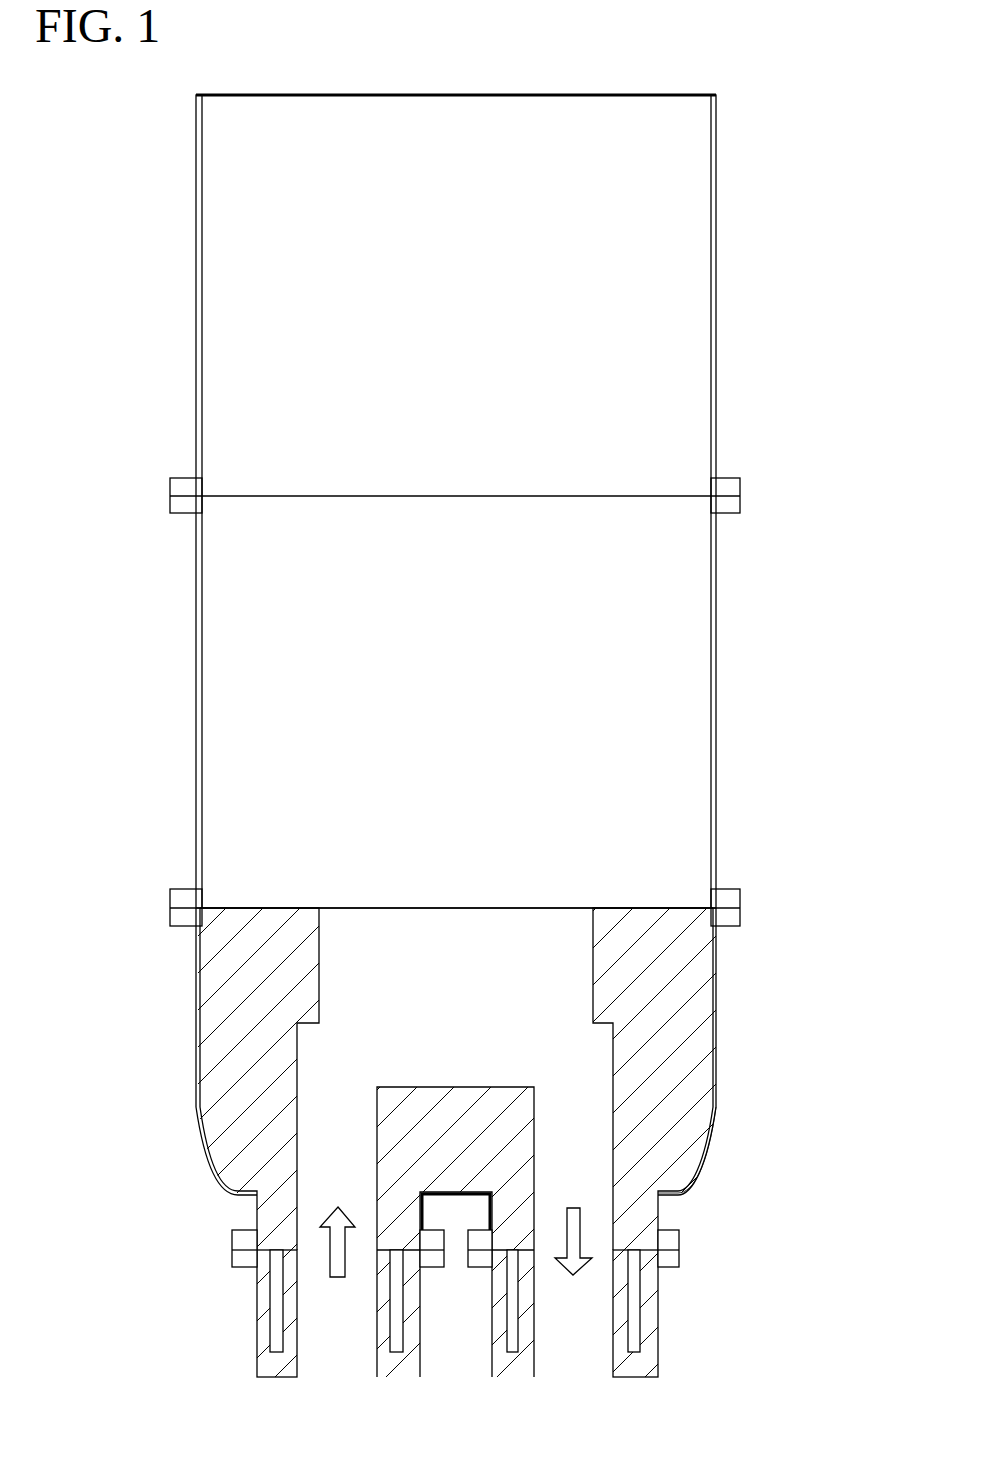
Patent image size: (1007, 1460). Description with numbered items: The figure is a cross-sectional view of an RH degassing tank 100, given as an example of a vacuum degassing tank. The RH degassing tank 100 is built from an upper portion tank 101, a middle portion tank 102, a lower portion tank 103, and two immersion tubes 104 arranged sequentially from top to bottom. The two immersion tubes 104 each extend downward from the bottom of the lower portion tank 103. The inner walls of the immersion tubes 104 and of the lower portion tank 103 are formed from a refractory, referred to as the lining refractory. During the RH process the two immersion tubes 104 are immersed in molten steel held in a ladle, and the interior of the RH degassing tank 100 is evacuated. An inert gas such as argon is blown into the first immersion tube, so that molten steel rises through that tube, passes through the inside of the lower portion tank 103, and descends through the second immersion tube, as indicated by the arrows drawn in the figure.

The RH degassing tank 100 is at (746, 148).
The upper portion tank 101 is at (718, 322).
The middle portion tank 102 is at (718, 718).
The lower portion tank 103 is at (716, 1008).
The immersion tubes 104 is at (257, 1313).